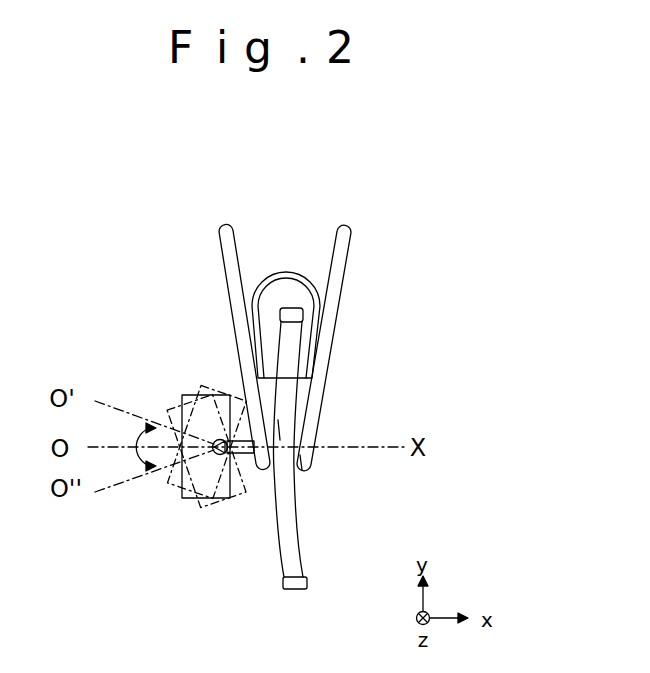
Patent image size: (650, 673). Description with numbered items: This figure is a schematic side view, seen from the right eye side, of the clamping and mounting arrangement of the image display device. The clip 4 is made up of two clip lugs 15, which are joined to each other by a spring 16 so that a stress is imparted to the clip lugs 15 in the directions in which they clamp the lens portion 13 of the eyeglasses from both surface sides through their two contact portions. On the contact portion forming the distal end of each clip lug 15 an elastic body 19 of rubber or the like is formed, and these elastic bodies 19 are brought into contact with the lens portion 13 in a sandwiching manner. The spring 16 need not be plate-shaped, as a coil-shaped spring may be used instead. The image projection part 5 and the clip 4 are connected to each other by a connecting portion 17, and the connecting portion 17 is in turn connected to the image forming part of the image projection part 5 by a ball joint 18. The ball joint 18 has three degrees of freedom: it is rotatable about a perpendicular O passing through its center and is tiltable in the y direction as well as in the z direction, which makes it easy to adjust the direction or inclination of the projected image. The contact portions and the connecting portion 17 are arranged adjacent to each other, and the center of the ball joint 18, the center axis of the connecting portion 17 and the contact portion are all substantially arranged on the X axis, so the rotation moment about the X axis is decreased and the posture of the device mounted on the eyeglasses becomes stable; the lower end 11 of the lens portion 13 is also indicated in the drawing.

The clip 4 is at (378, 253).
The image projection part 5 is at (167, 370).
The lower end portion of rod 11 is at (286, 591).
The lens portion 13 is at (294, 538).
The clip lugs 15 is at (221, 236).
The spring 16 is at (316, 287).
The connecting portion 17 is at (250, 460).
The ball joint 18 is at (214, 453).
The elastic body 19 is at (278, 420).